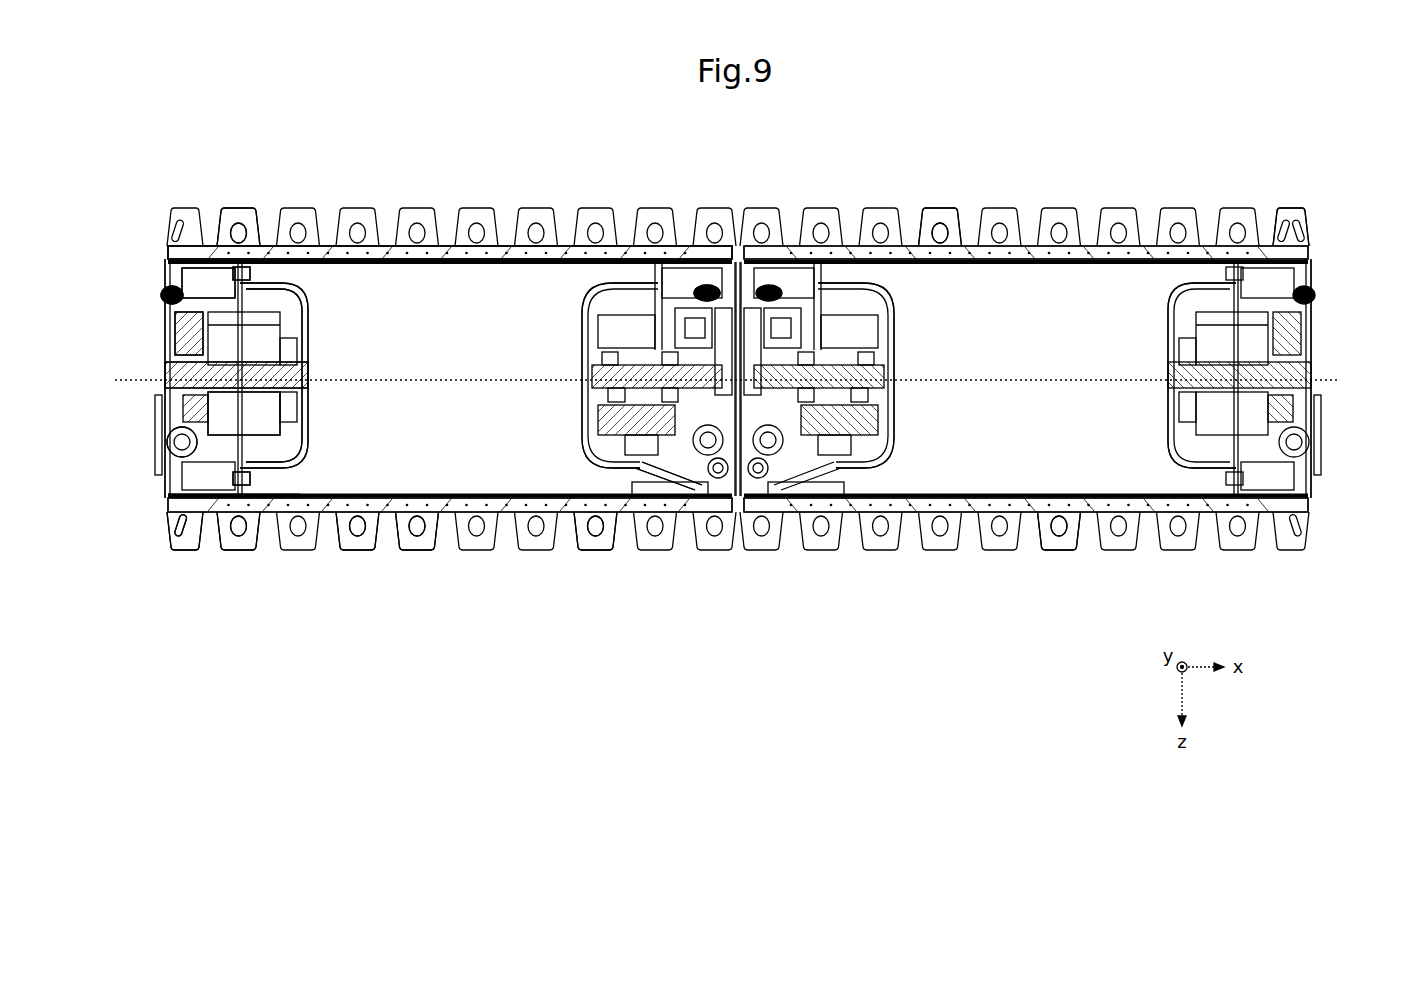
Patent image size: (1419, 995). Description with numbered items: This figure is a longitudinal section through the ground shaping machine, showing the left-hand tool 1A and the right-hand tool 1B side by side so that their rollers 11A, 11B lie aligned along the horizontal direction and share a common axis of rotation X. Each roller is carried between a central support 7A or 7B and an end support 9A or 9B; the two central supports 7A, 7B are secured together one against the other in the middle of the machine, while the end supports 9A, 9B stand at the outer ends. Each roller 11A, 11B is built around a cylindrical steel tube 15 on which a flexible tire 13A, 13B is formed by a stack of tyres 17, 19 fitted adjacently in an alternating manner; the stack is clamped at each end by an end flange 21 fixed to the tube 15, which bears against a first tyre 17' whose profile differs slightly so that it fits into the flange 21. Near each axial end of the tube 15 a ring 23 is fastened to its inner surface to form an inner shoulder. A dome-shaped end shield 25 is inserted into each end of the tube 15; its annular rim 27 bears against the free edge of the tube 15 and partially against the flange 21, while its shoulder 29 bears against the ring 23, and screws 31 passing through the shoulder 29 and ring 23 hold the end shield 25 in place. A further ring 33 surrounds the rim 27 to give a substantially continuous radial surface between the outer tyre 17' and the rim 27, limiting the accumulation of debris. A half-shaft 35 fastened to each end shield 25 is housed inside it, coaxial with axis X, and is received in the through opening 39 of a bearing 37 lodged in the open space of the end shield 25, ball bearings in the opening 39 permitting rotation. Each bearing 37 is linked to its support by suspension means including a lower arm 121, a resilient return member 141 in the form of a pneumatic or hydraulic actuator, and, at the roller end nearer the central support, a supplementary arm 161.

The left-hand assembly or tool 1A is at (438, 572).
The right-hand assembly or tool 1B is at (967, 568).
The support 7A is at (720, 550).
The support 7B is at (751, 550).
The end support 9A is at (164, 476).
The end support 9B is at (1312, 468).
The roller 11A is at (150, 528).
The roller 11B is at (1312, 525).
The flexible tire 13A is at (594, 561).
The flexible tire 13B is at (1055, 552).
The tube 15 is at (1032, 263).
The tyre 17 is at (668, 381).
The first tyre 17' is at (738, 371).
The tyre 19 is at (919, 246).
The end flange 21 is at (1310, 262).
The ring 23 is at (1205, 210).
The end shield 25 is at (1170, 416).
The annular rim 27 is at (1311, 497).
The shoulder 29 is at (1255, 541).
The screw 31 is at (1224, 480).
The ring 33 is at (1311, 240).
The half-shaft 35 is at (1182, 366).
The bearing 37 is at (1176, 330).
The through opening 39 is at (890, 362).
The lower arm 121 is at (1320, 316).
The resilient return member 141 is at (878, 428).
The supplementary arm 161 is at (812, 466).
The axis of rotation X is at (729, 377).